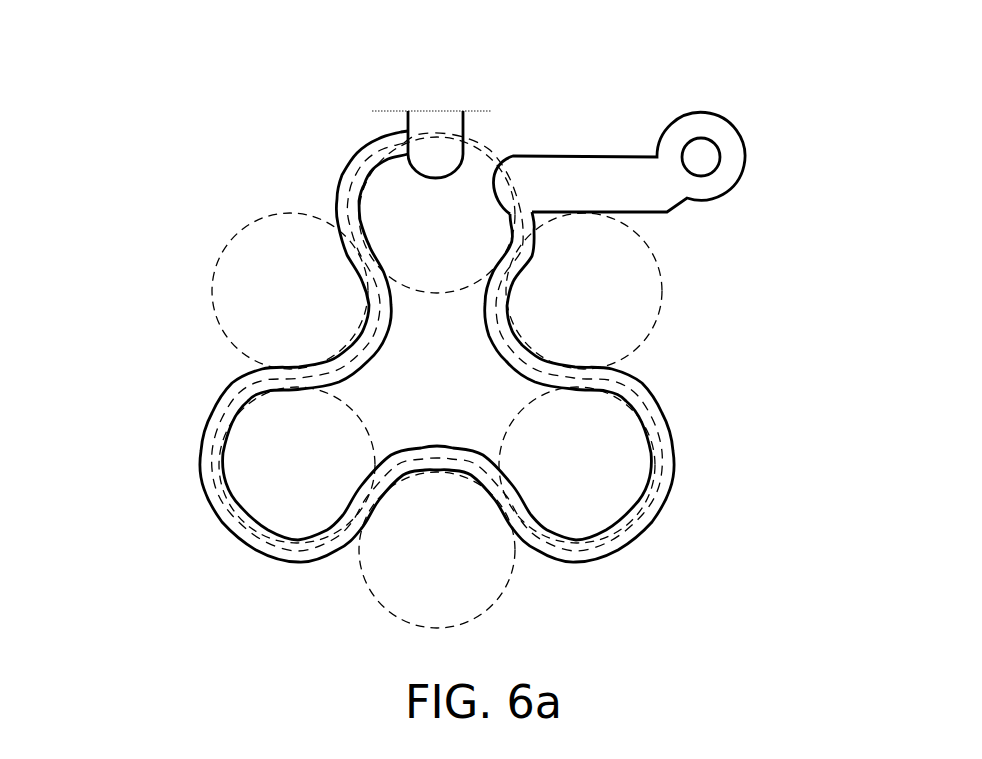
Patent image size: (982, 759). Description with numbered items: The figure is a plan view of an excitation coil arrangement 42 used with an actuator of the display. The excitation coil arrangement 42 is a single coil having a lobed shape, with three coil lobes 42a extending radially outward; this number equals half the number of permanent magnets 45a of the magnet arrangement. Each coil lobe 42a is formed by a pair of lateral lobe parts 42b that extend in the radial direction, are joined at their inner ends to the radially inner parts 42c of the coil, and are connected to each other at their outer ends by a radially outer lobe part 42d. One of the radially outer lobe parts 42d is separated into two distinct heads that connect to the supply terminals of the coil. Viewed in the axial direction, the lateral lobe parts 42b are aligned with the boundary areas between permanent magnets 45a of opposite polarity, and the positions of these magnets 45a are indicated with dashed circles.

The excitation coil arrangement 42 is at (457, 350).
The coil lobe 42a is at (338, 182).
The lateral lobe part 42b is at (518, 547).
The radially inner part 42c is at (347, 340).
The radially outer lobe part 42d is at (358, 157).
The permanent magnet 45a is at (488, 152).